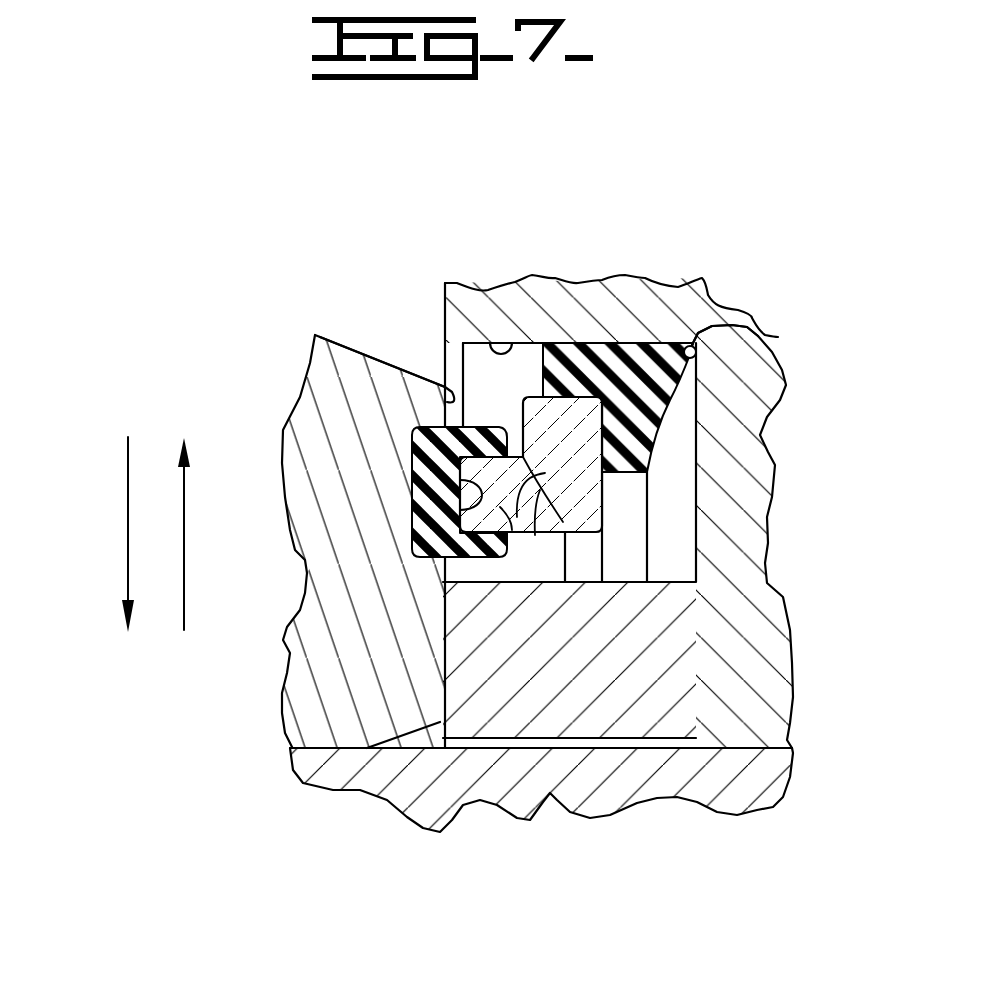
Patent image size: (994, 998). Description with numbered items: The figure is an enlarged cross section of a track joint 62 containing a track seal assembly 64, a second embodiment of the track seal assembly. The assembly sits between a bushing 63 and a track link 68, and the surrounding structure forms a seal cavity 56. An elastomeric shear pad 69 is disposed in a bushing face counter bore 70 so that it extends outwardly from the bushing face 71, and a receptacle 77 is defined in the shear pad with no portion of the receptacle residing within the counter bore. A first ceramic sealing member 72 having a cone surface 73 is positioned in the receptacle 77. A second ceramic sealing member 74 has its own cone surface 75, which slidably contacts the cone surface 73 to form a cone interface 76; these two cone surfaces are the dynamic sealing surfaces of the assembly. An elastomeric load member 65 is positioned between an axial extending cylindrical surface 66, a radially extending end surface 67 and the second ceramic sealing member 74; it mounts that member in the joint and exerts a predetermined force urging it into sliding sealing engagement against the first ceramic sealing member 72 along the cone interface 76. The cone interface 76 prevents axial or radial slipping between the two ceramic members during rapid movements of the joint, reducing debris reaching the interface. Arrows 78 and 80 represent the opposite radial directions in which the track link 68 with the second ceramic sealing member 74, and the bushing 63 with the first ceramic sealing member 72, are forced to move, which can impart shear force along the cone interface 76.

The seal cavity 56 is at (740, 569).
The track joint 62 is at (408, 300).
The bushing 63 is at (347, 383).
The track seal assembly 64 is at (490, 397).
The elastomeric load member 65 is at (577, 370).
The axial extending cylindrical surface 66 is at (497, 345).
The radially extending end surface 67 is at (765, 335).
The track link 68 is at (683, 310).
The elastomeric shear pad 69 is at (442, 562).
The bushing face counter bore 70 is at (340, 432).
The bushing face 71 is at (452, 392).
The first ceramic sealing member 72 is at (512, 530).
The cone surface 73 is at (540, 490).
The second ceramic sealing member 74 is at (542, 413).
The cone surface 75 is at (517, 517).
The cone interface 76 is at (535, 535).
The receptacle 77 is at (460, 508).
The arrow 78 is at (127, 512).
The arrow 80 is at (182, 553).